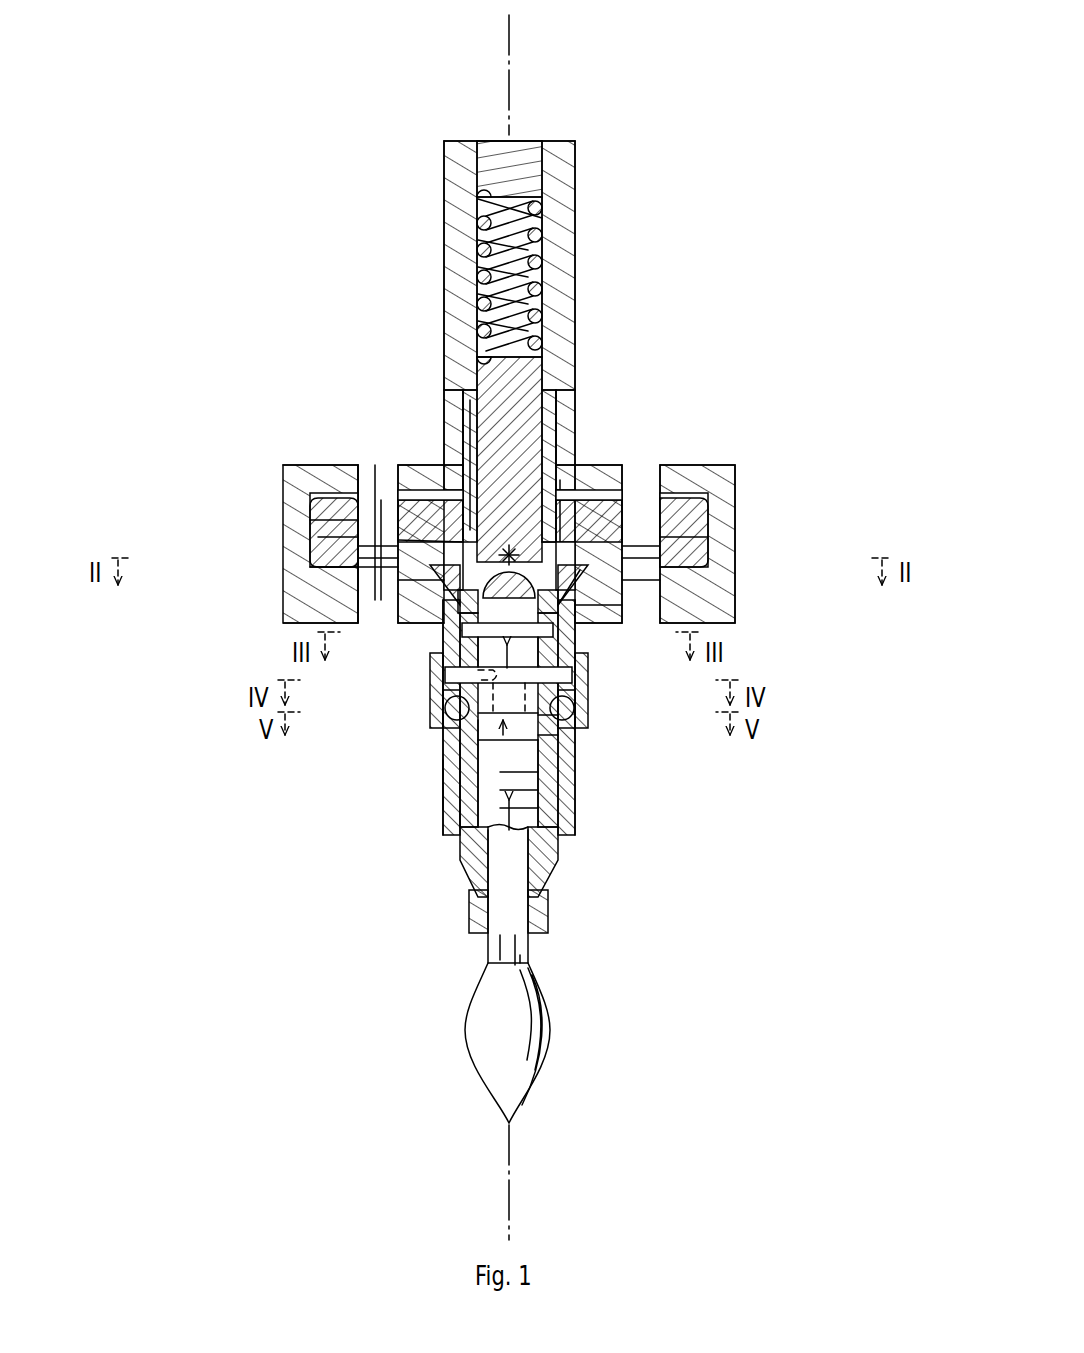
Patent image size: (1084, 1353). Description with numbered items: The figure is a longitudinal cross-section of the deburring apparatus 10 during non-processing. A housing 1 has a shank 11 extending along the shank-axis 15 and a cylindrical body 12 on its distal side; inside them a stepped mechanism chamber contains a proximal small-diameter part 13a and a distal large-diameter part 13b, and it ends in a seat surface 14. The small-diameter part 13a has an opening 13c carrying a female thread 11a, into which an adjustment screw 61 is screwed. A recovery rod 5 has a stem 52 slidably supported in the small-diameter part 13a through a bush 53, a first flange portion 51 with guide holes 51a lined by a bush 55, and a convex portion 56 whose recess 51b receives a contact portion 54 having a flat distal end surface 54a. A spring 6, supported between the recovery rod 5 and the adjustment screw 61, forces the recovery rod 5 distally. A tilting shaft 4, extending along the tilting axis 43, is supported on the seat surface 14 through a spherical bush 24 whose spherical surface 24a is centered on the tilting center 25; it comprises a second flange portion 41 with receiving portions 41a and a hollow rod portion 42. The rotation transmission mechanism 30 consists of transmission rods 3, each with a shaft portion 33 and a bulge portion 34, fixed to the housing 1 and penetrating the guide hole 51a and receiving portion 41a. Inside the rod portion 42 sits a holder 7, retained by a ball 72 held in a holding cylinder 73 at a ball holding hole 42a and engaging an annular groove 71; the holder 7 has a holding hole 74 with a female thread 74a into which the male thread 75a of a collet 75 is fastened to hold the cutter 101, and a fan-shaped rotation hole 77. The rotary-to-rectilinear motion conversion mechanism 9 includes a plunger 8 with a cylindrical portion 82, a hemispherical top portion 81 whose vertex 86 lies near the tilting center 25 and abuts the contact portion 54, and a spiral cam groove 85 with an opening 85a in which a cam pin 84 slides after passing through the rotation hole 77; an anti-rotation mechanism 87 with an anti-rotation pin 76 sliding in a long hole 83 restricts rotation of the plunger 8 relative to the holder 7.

The deburring apparatus 10 is at (305, 130).
The shank-axis 15 is at (515, 66).
The tilting axis 43 is at (515, 1186).
The shank 11 is at (444, 232).
The housing 1 is at (444, 185).
The adjustment screw 61 is at (492, 150).
The female thread 11a is at (470, 146).
The opening 13c is at (545, 150).
The spring 6 is at (541, 205).
The small-diameter part 13a is at (480, 292).
The stem 52 is at (500, 375).
The recovery rod 5 is at (336, 305).
The recess 51b is at (470, 400).
The convex portion 56 is at (520, 480).
The guide hole 51a is at (392, 485).
The first flange portion 51 is at (362, 478).
The bush 53 is at (552, 430).
The contact portion 54 is at (556, 450).
The tilting center 25 is at (562, 500).
The vertex 86 is at (520, 560).
The distal end surface 54a is at (575, 520).
The bush 55 is at (650, 490).
The body 12 is at (720, 472).
The large-diameter part 13b is at (400, 545).
The bulge portion 34 is at (335, 540).
The receiving portion 41a is at (390, 547).
The rotation transmission mechanism 30 is at (150, 490).
The transmission rod 3 is at (212, 520).
The shaft portion 33 is at (400, 562).
The seat surface 14 is at (378, 597).
The second flange portion 41 is at (700, 540).
The spherical bush 24 is at (685, 592).
The spherical surface 24a is at (570, 620).
The rod portion 42 is at (580, 798).
The tilting shaft 4 is at (845, 505).
The holding hole 74 is at (443, 667).
The female thread 74a is at (552, 850).
The collet 75 is at (548, 920).
The male thread 75a is at (505, 745).
The rotary-to-rectilinear motion conversion mechanism 9 is at (503, 722).
The anti-rotation pin 76 is at (478, 632).
The holder 7 is at (348, 667).
The rotation hole 77 is at (443, 700).
The cam pin 84 is at (535, 690).
The long hole 83 is at (540, 680).
The opening 85a is at (520, 705).
The holding cylinder 73 is at (445, 714).
The ball 72 is at (443, 745).
The ball holding hole 42a is at (445, 785).
The top portion 81 is at (560, 722).
The cam groove 85 is at (545, 742).
The cylindrical portion 82 is at (570, 782).
The plunger 8 is at (716, 740).
The annular groove 71 is at (462, 770).
The anti-rotation mechanism 87 is at (500, 800).
The cutter 101 is at (537, 1060).